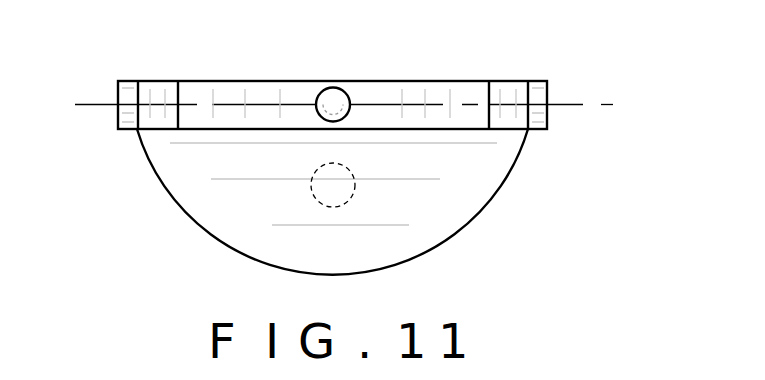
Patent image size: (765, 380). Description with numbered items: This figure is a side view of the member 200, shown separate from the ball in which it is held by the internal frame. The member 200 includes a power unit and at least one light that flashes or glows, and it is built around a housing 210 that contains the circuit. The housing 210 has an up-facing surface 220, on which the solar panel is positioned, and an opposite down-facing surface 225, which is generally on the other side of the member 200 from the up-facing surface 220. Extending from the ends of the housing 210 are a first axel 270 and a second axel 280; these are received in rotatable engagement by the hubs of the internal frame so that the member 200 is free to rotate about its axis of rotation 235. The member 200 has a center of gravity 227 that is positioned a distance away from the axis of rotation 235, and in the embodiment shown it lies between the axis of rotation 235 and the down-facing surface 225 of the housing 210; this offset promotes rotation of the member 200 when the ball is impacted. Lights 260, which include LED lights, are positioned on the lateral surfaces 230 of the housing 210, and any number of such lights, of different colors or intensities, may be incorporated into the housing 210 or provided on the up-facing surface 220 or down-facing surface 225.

The member 200 is at (153, 194).
The housing 210 is at (482, 167).
The up-facing surface 220 is at (227, 80).
The down-facing surface 225 is at (442, 244).
The center of gravity 227 is at (313, 195).
The lateral surfaces 230 is at (430, 93).
The axis of rotation 235 is at (606, 102).
The lights 260 is at (331, 97).
The first axel 270 is at (118, 95).
The second axel 280 is at (548, 88).